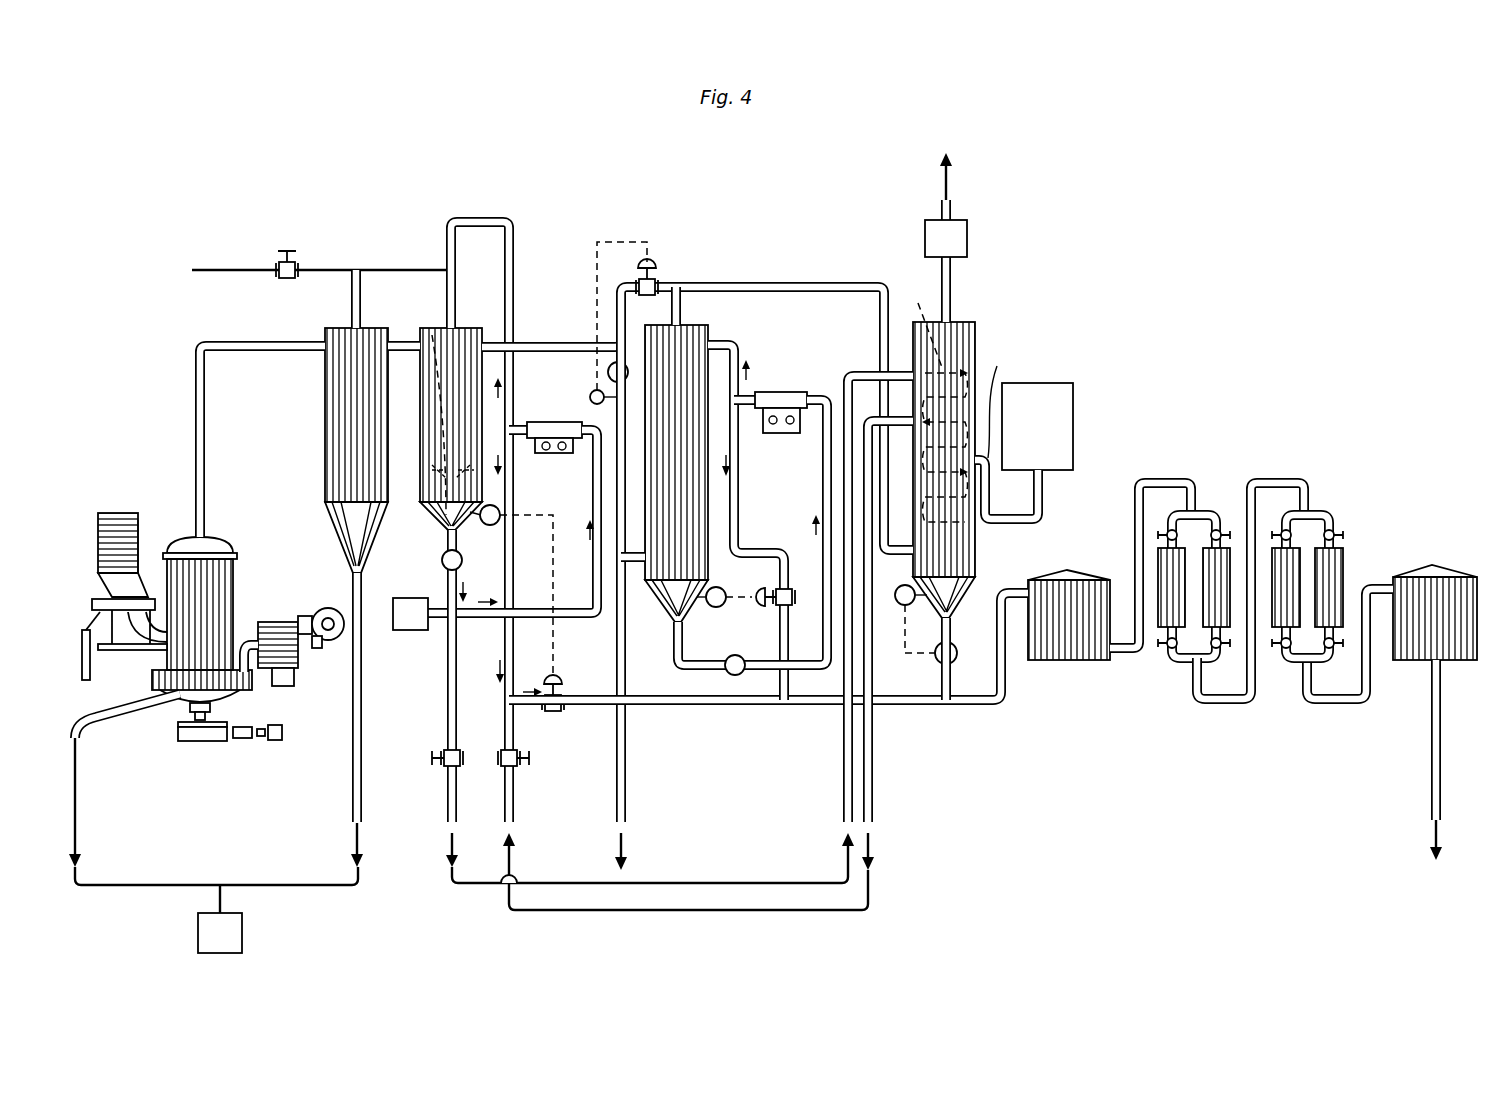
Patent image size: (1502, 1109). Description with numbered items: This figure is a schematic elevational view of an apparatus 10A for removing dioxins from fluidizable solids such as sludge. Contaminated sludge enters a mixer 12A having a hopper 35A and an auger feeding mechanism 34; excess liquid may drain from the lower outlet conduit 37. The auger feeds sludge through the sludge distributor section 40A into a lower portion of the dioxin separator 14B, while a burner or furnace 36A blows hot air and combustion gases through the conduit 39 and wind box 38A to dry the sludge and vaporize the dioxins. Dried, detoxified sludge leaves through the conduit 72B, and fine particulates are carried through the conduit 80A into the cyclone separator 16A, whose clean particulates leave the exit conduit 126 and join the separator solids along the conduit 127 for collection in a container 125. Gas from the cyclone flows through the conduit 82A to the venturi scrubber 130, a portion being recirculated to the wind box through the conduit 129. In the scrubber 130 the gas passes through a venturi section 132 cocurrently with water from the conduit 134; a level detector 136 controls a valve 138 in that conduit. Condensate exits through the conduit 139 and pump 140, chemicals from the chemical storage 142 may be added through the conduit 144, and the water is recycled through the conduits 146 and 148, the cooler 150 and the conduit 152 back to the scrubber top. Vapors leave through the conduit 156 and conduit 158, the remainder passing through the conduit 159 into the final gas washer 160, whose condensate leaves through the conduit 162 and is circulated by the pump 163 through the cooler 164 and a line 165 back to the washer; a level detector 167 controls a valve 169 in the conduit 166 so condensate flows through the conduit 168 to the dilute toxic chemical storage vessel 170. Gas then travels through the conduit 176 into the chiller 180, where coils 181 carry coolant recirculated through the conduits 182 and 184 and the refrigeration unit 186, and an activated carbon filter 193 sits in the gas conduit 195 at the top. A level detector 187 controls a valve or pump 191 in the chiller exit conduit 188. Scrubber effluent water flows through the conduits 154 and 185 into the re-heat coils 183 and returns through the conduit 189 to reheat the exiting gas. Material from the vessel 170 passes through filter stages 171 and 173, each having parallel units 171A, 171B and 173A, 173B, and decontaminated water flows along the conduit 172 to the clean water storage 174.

The apparatus for removing dioxin from fluidizable solids 10A is at (268, 432).
The mixer 12A is at (125, 513).
The dioxin separator 14B is at (236, 578).
The cyclone separator 16A is at (338, 330).
The screw or auger feeding mechanism 34 is at (128, 652).
The hopper 35A is at (98, 530).
The burner or furnace 36A is at (283, 622).
The lower outlet conduit 37 is at (88, 632).
The wind box 38A is at (240, 694).
The conduit 39 is at (240, 742).
The sludge distributor section 40A is at (140, 565).
The conduit 72B is at (170, 704).
The conduit 80A is at (265, 340).
The conduit 82A is at (398, 248).
The receiver 125 is at (248, 935).
The fine particulate exit conduit 126 is at (353, 738).
The conduit 127 is at (175, 884).
The conduit 129 is at (310, 266).
The venturi scrubber 130 is at (487, 332).
The venturi section 132 is at (440, 341).
The conduit 134 is at (530, 710).
The level detector 136 is at (492, 525).
The valve 138 is at (556, 712).
The conduit 139 is at (447, 540).
The pump 140 is at (441, 562).
The chemical storage 142 is at (396, 628).
The conduit 144 is at (436, 624).
The conduit 146 is at (533, 612).
The conduit 148 is at (590, 506).
The cooler 150 is at (556, 422).
The conduit 152 is at (452, 228).
The conduit 154 is at (445, 724).
The conduit 156 is at (552, 344).
The conduit 158 is at (616, 640).
The conduit 159 is at (640, 566).
The final gas washer 160 is at (700, 332).
The conduit 162 is at (675, 642).
The pump 163 is at (730, 674).
The cooler 164 is at (790, 392).
The conduit 165 is at (822, 456).
The conduit 166 is at (744, 520).
The level detector 167 is at (716, 608).
The conduit 168 is at (826, 708).
The valve 169 is at (753, 608).
The dilute toxic chemical storage vessel 170 is at (1066, 570).
The filter stage 171 is at (1218, 486).
The first stage filter 171A is at (1160, 612).
The first stage filter 171B is at (1230, 612).
The conduit 172 is at (1346, 704).
The filter stage 173 is at (1334, 492).
The second stage filter 173A is at (1270, 555).
The second stage filter 173B is at (1344, 555).
The clean water storage 174 is at (1432, 568).
The conduit 176 is at (800, 282).
The chiller 180 is at (976, 332).
The coils 181 is at (975, 491).
The conduit 182 is at (998, 522).
The coils 183 is at (934, 400).
The conduit 184 is at (1008, 400).
The conduit 185 is at (844, 788).
The refrigeration unit 186 is at (1074, 405).
The level detector 187 is at (895, 596).
The chiller exit conduit 188 is at (950, 636).
The conduit 189 is at (872, 786).
The valve or pump 191 is at (934, 660).
The activated carbon filter 193 is at (968, 222).
The gas conduit 195 is at (950, 282).